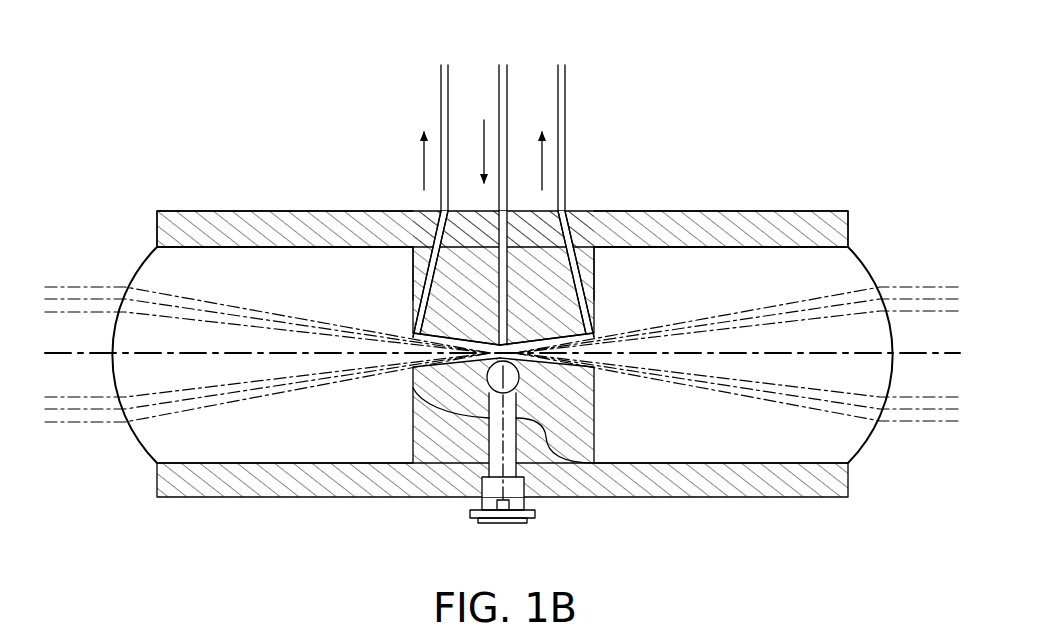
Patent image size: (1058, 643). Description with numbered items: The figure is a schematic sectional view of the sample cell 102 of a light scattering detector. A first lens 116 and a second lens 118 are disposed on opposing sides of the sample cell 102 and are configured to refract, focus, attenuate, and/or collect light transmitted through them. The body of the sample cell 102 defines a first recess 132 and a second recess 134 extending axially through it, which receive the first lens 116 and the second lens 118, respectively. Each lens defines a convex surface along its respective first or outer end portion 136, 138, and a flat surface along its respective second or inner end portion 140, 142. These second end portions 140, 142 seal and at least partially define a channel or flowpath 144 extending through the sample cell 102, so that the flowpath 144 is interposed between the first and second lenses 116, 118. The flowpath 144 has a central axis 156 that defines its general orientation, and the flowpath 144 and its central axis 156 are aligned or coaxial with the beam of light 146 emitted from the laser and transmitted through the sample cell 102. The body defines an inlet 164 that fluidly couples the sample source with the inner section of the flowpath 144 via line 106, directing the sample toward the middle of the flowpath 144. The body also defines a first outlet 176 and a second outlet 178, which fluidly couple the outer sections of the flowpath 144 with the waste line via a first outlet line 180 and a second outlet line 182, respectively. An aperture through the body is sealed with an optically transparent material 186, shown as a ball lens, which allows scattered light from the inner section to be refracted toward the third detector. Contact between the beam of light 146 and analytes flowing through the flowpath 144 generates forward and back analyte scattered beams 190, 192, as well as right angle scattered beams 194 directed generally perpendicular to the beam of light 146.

The sample cell 102 is at (126, 469).
The line 106 is at (498, 88).
The first lens 116 is at (306, 355).
The second lens 118 is at (696, 355).
The first recess 132 is at (318, 247).
The second recess 134 is at (707, 247).
The first end portion 136 is at (182, 244).
The first end portion 138 is at (804, 244).
The second end portion 140 is at (372, 244).
The second end portion 142 is at (611, 244).
The flowpath 144 is at (585, 463).
The beam of light 146 is at (923, 357).
The central axis 156 is at (412, 340).
The inlet 164 is at (510, 328).
The first outlet 176 is at (440, 257).
The second outlet 178 is at (557, 220).
The first outlet line 180 is at (440, 90).
The second outlet line 182 is at (566, 90).
The optically transparent material 186 is at (487, 373).
The forward analyte scattered beam 190 is at (69, 283).
The back analyte scattered beam 192 is at (923, 283).
The right angle scattered beam 194 is at (490, 431).